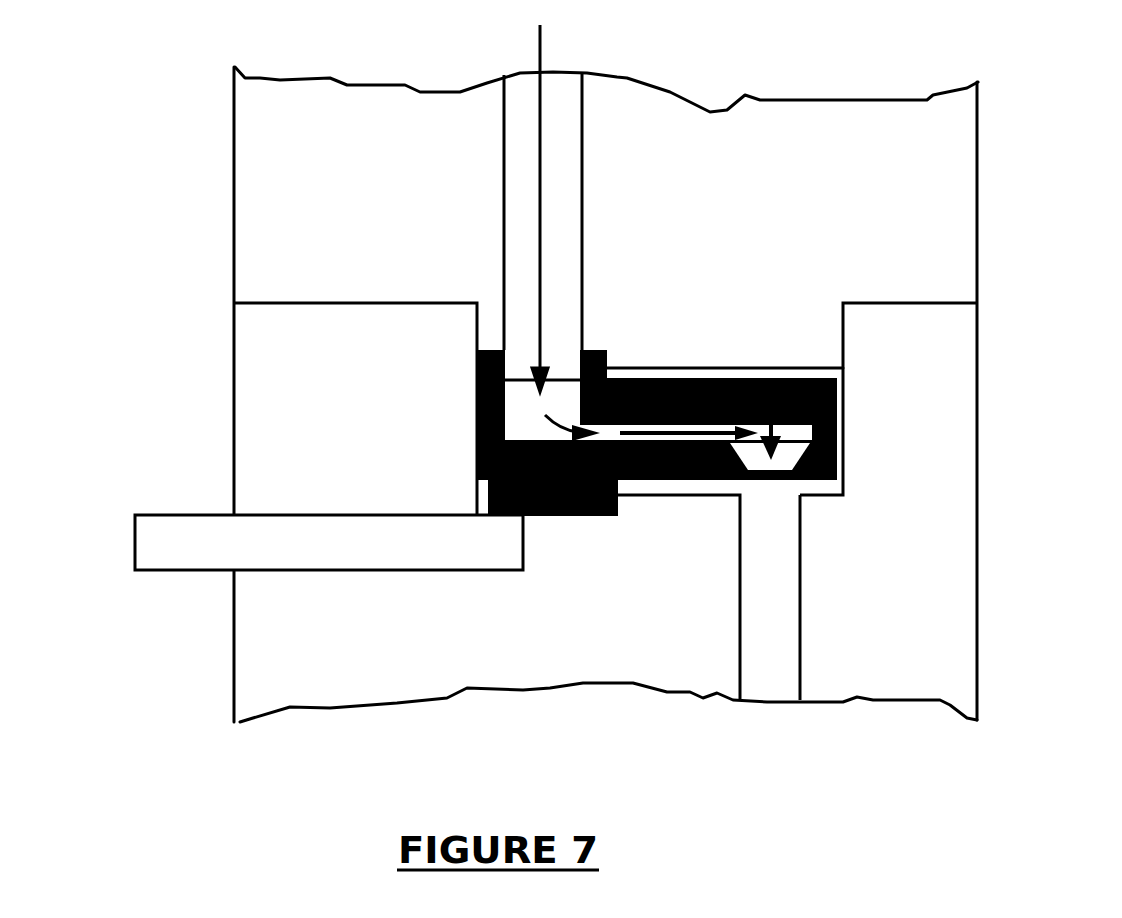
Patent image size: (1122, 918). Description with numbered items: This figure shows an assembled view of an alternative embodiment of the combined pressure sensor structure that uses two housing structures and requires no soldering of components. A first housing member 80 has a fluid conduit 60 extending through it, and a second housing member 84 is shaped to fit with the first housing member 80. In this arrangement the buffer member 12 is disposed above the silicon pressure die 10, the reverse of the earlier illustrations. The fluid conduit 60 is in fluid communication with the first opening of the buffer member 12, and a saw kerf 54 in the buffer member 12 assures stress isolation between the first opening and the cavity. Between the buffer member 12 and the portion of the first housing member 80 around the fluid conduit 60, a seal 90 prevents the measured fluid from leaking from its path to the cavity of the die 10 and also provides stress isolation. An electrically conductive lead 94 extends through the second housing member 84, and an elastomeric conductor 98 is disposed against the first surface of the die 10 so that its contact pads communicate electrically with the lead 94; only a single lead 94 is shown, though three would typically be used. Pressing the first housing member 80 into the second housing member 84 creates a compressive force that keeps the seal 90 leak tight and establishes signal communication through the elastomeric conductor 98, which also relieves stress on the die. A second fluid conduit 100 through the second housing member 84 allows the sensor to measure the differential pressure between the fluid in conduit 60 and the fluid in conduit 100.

The silicon pressure die 10 is at (475, 467).
The buffer member 12 is at (730, 380).
The saw kerf 54 is at (670, 393).
The fluid conduit 60 is at (561, 142).
The first housing member 80 is at (945, 265).
The second housing member 84 is at (283, 332).
The seal 90 is at (598, 348).
The electrically conductive lead 94 is at (263, 543).
The elastomeric conductor 98 is at (560, 517).
The second fluid conduit 100 is at (775, 642).